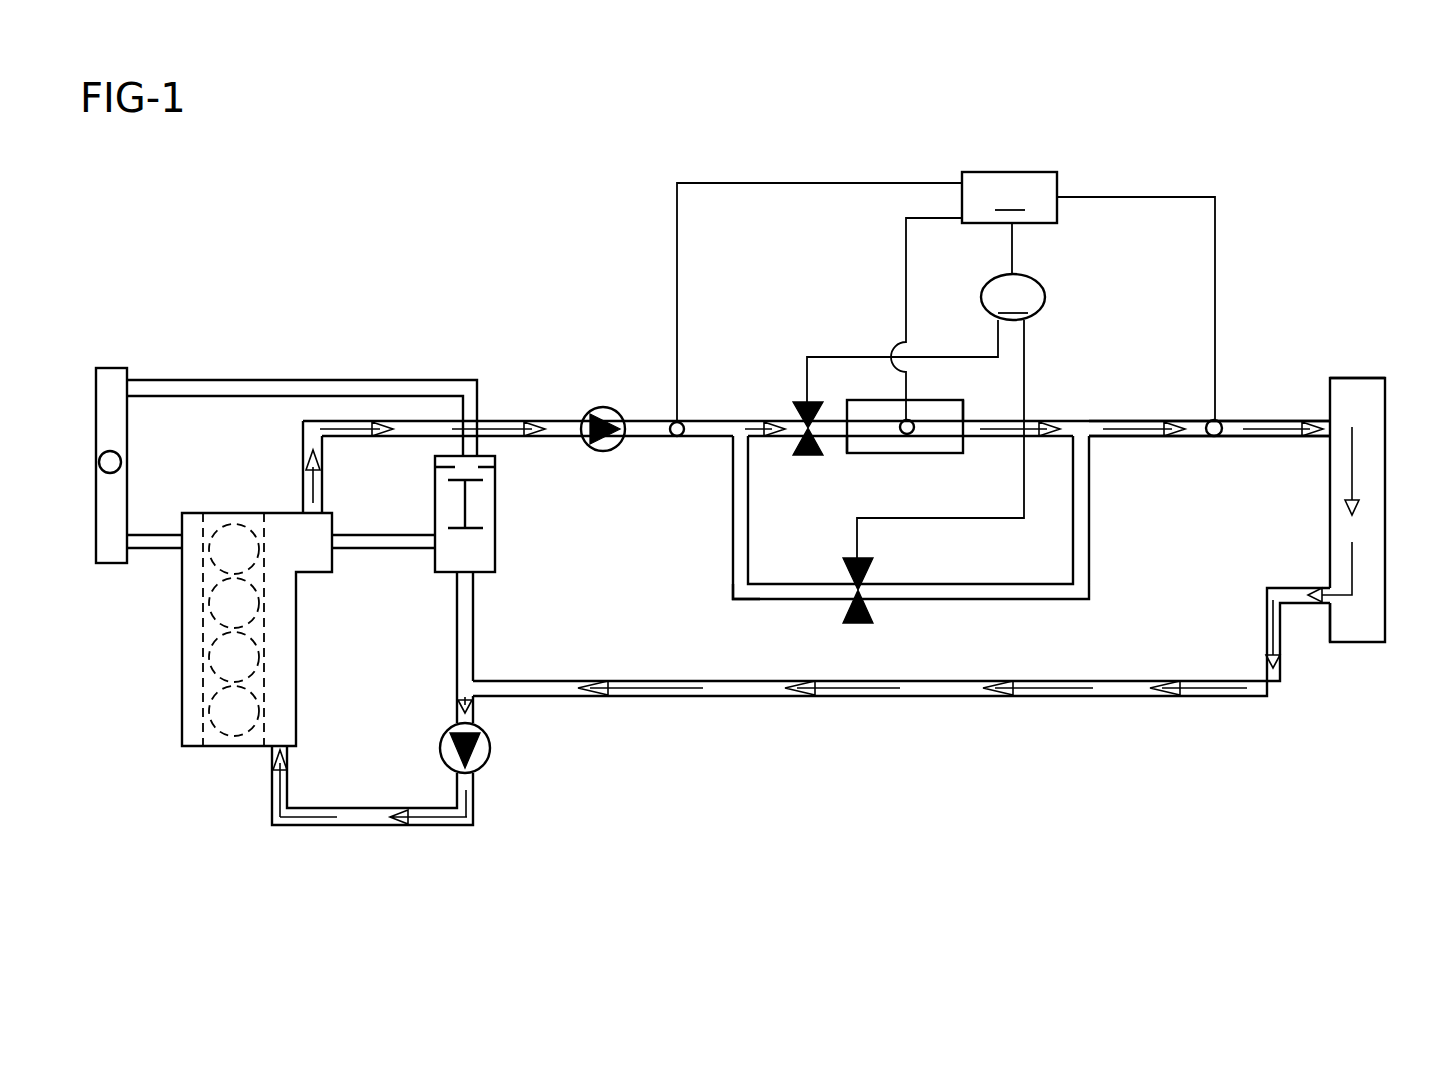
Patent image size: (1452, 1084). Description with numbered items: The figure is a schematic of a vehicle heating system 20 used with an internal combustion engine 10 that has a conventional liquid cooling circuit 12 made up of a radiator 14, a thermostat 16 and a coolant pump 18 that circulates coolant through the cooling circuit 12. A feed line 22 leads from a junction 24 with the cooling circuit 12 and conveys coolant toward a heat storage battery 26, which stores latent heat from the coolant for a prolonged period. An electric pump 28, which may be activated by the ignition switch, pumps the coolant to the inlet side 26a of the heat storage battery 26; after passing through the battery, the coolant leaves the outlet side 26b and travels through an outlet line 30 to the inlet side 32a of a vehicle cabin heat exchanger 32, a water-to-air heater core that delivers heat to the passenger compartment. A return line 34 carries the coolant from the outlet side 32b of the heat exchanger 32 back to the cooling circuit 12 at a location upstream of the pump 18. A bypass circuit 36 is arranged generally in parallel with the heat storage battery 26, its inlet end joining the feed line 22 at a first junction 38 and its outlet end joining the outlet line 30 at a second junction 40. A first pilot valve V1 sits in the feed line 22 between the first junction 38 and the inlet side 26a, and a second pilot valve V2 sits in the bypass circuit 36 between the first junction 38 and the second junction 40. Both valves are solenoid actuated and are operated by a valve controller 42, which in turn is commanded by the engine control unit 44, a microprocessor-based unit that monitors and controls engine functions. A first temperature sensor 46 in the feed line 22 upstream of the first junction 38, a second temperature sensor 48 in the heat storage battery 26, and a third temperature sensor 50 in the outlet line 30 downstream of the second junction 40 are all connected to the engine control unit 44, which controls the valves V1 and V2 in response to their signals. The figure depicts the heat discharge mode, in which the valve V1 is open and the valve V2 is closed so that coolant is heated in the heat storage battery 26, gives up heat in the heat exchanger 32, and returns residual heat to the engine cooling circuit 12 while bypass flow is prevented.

The internal combustion engine 10 is at (182, 707).
The liquid cooling system or circuit 12 is at (252, 356).
The radiator 14 is at (80, 377).
The thermostat 16 is at (498, 505).
The coolant pump 18 is at (490, 748).
The heating system 20 is at (655, 255).
The feed line 22 is at (530, 423).
The junction 24 is at (310, 540).
The heat storage battery 26 is at (880, 410).
The inlet side of the heat storage battery 26a is at (840, 443).
The outlet side of the heat storage battery 26b is at (962, 408).
The electric pump 28 is at (613, 450).
The outlet line 30 is at (1162, 420).
The vehicle cabin heat exchanger 32 is at (1329, 498).
The inlet side of the heat exchanger 32a is at (1330, 397).
The outlet side of the heat exchanger 32b is at (1330, 625).
The return line 34 is at (923, 695).
The bypass circuit 36 is at (733, 602).
The first junction 38 is at (732, 440).
The second junction 40 is at (1093, 435).
The valve controller 42 is at (926, 416).
The engine control unit 44 is at (1053, 296).
The first temperature sensor 46 is at (673, 423).
The second temperature sensor 48 is at (912, 432).
The third temperature sensor 50 is at (1220, 418).
The first pilot valve V1 is at (795, 400).
The second pilot valve V2 is at (870, 622).